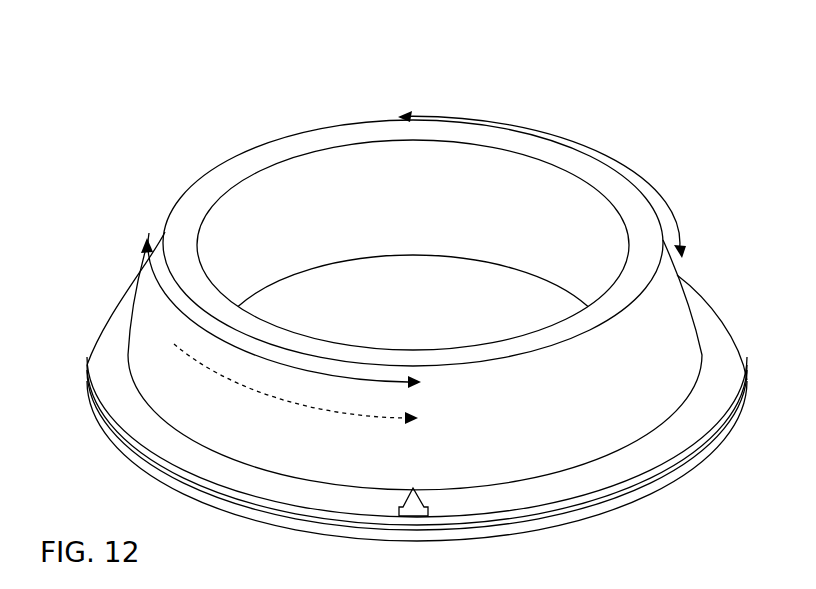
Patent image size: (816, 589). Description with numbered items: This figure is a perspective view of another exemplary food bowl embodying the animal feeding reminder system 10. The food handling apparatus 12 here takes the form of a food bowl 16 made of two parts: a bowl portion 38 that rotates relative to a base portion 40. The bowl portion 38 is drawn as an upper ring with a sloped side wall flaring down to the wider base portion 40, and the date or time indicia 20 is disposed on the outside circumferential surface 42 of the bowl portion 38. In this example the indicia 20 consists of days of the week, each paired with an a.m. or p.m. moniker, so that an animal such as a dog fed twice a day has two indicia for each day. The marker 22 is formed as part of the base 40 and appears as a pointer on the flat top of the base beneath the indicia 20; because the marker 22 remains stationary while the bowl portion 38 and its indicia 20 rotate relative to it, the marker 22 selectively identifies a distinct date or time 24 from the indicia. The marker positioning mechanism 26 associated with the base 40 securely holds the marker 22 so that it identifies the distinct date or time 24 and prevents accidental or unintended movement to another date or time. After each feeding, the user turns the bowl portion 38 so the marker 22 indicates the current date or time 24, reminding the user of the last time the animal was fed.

The animal feeding reminder system 10 is at (606, 100).
The food handling apparatus 12 is at (436, 194).
The food bowl 16 is at (415, 264).
The bowl portion 38 is at (203, 178).
The base portion 40 is at (120, 308).
The outside circumferential surface 42 is at (655, 320).
The marker positioning mechanism 26 is at (130, 363).
The distinct date or time 24 is at (395, 450).
The date or time indicia 20 is at (553, 453).
The marker 22 is at (413, 505).